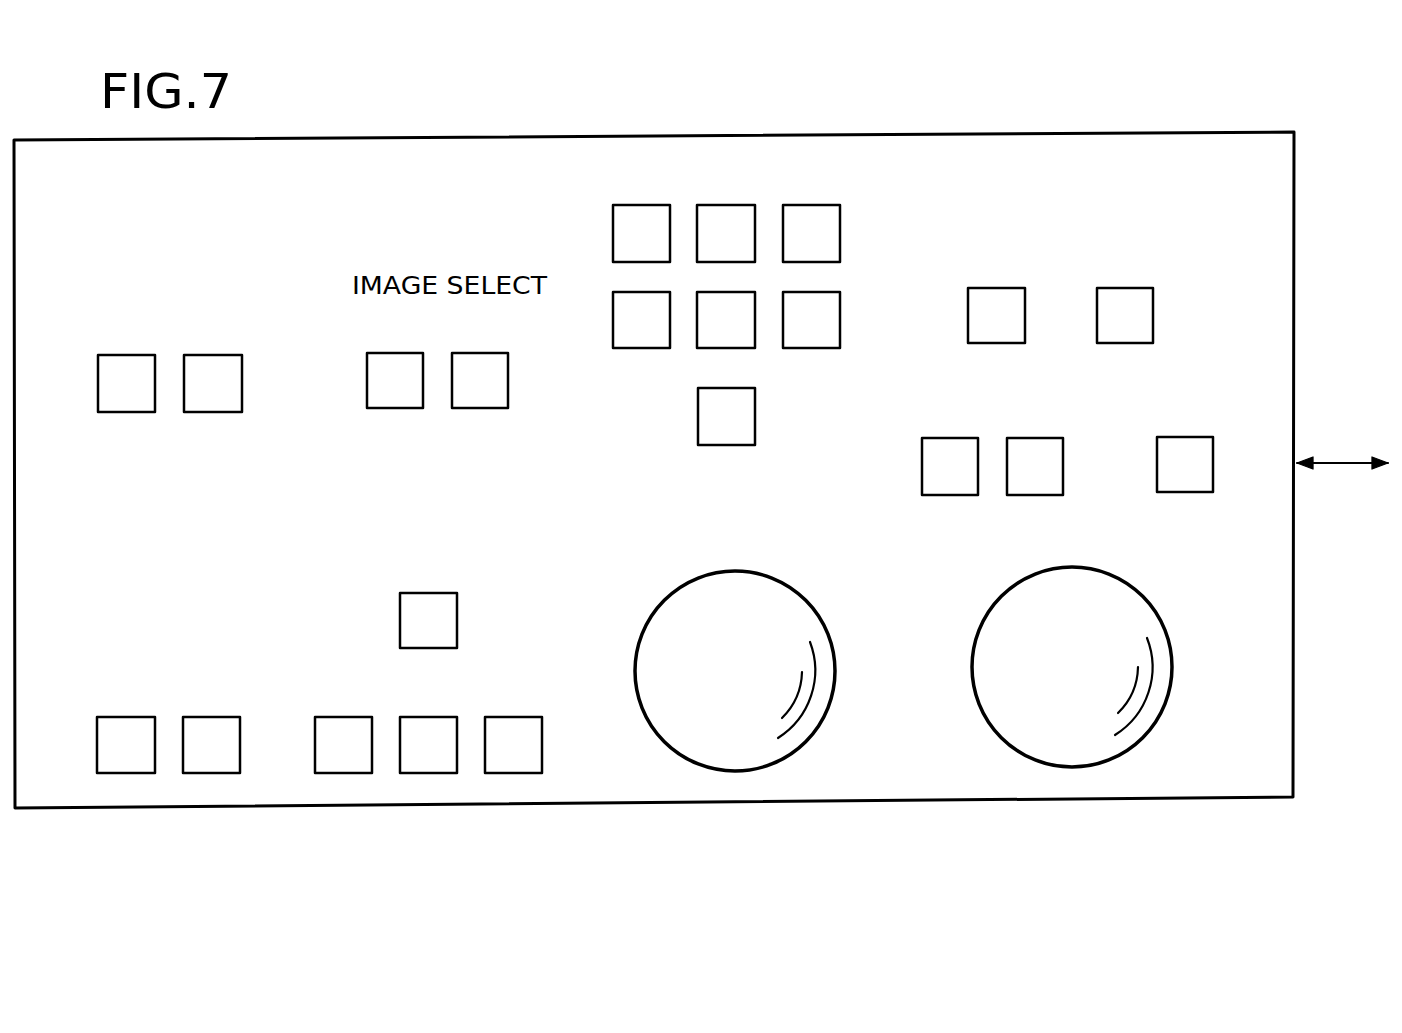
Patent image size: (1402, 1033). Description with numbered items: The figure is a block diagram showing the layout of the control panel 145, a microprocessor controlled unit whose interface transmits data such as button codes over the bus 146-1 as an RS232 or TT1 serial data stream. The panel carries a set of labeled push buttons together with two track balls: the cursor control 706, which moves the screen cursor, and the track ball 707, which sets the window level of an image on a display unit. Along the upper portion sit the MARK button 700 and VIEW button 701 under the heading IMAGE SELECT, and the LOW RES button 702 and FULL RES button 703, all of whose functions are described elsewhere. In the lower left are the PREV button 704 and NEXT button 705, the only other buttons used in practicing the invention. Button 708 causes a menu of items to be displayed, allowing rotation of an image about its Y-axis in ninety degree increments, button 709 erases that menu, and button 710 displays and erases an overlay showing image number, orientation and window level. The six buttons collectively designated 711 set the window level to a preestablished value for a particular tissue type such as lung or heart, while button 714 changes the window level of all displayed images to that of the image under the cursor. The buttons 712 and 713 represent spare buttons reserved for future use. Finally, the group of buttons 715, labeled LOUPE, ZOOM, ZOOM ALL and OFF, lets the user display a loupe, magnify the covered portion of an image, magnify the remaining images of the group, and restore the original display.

The control panel 145 is at (470, 800).
The bus 146-1 is at (1357, 466).
The MARK button 700 is at (397, 408).
The VIEW button 701 is at (490, 408).
The LOW RES button 702 is at (1025, 332).
The FULL RES button 703 is at (1153, 332).
The PREV button 704 is at (97, 747).
The NEXT button 705 is at (220, 773).
The cursor control track ball 706 is at (1158, 612).
The window level track ball 707 is at (818, 722).
The menu select button 708 is at (922, 494).
The menu off button 709 is at (1036, 495).
The overlay off button 710 is at (1157, 472).
The window level preset buttons 711 is at (857, 352).
The spare button 712 is at (130, 355).
The spare button 713 is at (202, 355).
The W/L ALL button 714 is at (700, 445).
The zoom buttons 715 is at (530, 568).